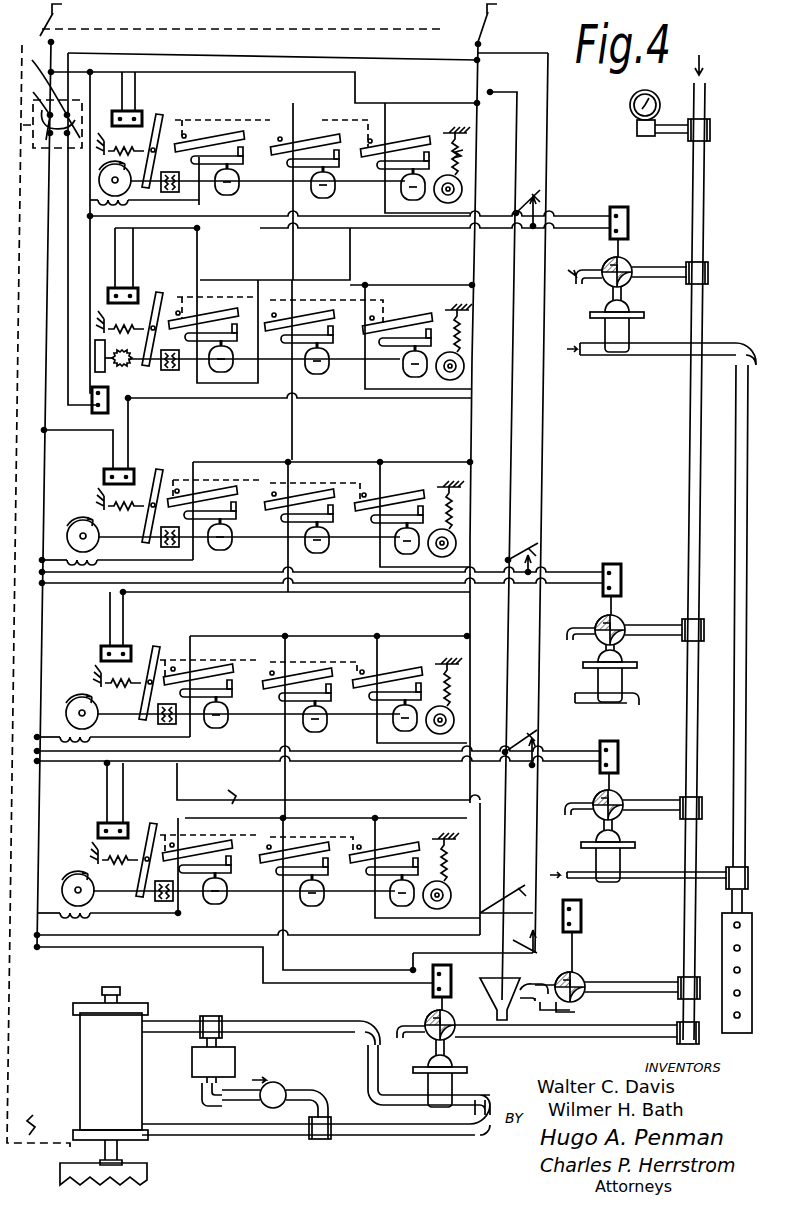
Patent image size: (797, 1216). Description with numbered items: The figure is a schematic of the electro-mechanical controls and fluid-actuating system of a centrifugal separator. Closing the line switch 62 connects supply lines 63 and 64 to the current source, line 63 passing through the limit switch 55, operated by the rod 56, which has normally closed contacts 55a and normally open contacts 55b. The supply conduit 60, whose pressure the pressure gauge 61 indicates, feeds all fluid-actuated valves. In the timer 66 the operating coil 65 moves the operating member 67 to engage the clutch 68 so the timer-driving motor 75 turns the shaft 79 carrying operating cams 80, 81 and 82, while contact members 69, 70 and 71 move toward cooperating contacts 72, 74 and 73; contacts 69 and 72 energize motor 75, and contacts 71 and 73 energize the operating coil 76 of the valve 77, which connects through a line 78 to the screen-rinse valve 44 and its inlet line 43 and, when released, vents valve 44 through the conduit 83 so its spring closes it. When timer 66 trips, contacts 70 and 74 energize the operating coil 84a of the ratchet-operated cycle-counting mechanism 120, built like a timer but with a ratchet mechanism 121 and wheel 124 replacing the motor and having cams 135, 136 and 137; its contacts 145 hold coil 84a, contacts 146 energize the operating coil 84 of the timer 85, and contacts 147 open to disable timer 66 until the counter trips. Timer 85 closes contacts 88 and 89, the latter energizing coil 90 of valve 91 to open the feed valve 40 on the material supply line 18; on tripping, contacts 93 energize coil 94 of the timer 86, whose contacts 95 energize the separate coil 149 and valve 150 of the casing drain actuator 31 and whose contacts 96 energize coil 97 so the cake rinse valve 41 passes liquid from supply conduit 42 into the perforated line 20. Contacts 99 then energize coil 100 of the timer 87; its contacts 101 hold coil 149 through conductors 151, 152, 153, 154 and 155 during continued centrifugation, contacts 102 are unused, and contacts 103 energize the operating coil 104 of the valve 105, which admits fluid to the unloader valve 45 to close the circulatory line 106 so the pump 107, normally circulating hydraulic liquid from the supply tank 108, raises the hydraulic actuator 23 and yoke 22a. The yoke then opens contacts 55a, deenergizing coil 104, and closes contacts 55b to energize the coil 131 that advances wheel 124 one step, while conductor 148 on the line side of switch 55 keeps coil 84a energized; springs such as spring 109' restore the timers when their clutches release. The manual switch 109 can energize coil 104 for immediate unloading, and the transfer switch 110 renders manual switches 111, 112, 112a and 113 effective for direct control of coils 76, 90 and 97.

The line switch 62 is at (42, 36).
The limit switch 55 is at (83, 120).
The normally closed contacts 55a is at (26, 98).
The normally open contacts 55b is at (34, 79).
The conductor 148 is at (62, 72).
The timer 66 is at (222, 94).
The operating coil 65 is at (138, 112).
The operating member 67 is at (159, 161).
The clutch 68 is at (186, 192).
The timer-driving motor 75 is at (98, 180).
The contact member 69 is at (234, 161).
The contact member 70 is at (325, 160).
The contact member 71 is at (416, 173).
The cooperating contact 72 is at (234, 175).
The cooperating contact 73 is at (416, 173).
The contact member 74 is at (325, 176).
The shaft 79 is at (234, 122).
The operating cam 80 is at (234, 175).
The operating cam 81 is at (330, 122).
The operating cam 82 is at (412, 212).
The transfer switch 110 is at (475, 78).
The spring 109' is at (484, 154).
The manually operable switch 111 is at (534, 503).
The supply line 64 is at (473, 700).
The pressure gauge 61 is at (630, 114).
The operating coil 76 is at (630, 210).
The valve 77 is at (626, 256).
The pipe 78 is at (652, 264).
The conduit 83 is at (590, 264).
The fluid-actuated valve 44 is at (638, 330).
The pipe 43 is at (585, 360).
The supply conduit 60 is at (690, 490).
The line 20 is at (742, 1028).
The ratchet-operated cycle-counting switch mechanism 120 is at (174, 262).
The operating coil 84a is at (138, 308).
The ratchet mechanism 121 is at (132, 369).
The wheel 124 is at (134, 368).
The contacts 145 is at (206, 352).
The contacts 146 is at (316, 355).
The contacts 147 is at (418, 344).
The cam 135 is at (212, 372).
The cam 136 is at (307, 376).
The cam 137 is at (406, 376).
The coil 131 is at (100, 418).
The supply line 63 is at (41, 806).
The timer 85 is at (174, 456).
The operating coil 84 is at (100, 502).
The contacts 88 is at (240, 518).
The contacts 89 is at (422, 496).
The contacts 93 is at (324, 522).
The manually operable switch 112 is at (523, 546).
The operating coil 90 is at (614, 566).
The valve 91 is at (624, 620).
The feed valve 40 is at (622, 688).
The supply line 18 is at (594, 707).
The timer 86 is at (177, 638).
The operating coil 94 is at (106, 644).
The contacts 95 is at (236, 694).
The contacts 96 is at (426, 672).
The contacts 99 is at (320, 702).
The manually operable switch 113 is at (520, 722).
The operating coil 97 is at (620, 752).
The cake rinse valve 41 is at (627, 852).
The supply conduit 42 is at (576, 868).
The timer 87 is at (74, 796).
The conductor 153 is at (172, 796).
The conductor 155 is at (244, 789).
The conductor 152 is at (374, 796).
The coil 100 is at (102, 858).
The conductor 154 is at (186, 900).
The contacts 101 is at (225, 872).
The contacts 103 is at (316, 880).
The contacts 102 is at (420, 854).
The conductor 151 is at (342, 936).
The switch 112a is at (464, 928).
The manually operable switch 109 is at (474, 949).
The operating coil 104 is at (470, 982).
The valve 105 is at (428, 1011).
The fluid motor 31 is at (515, 968).
The operating coil 149 is at (580, 922).
The valve 150 is at (578, 976).
The unloader valve 45 is at (470, 1066).
The hydraulic actuator 23 is at (87, 1078).
The yoke 22a is at (150, 1172).
The rod 56 is at (39, 1114).
The circulatory line 106 is at (269, 1024).
The supply tank 108 is at (205, 1066).
The pump 107 is at (288, 1096).